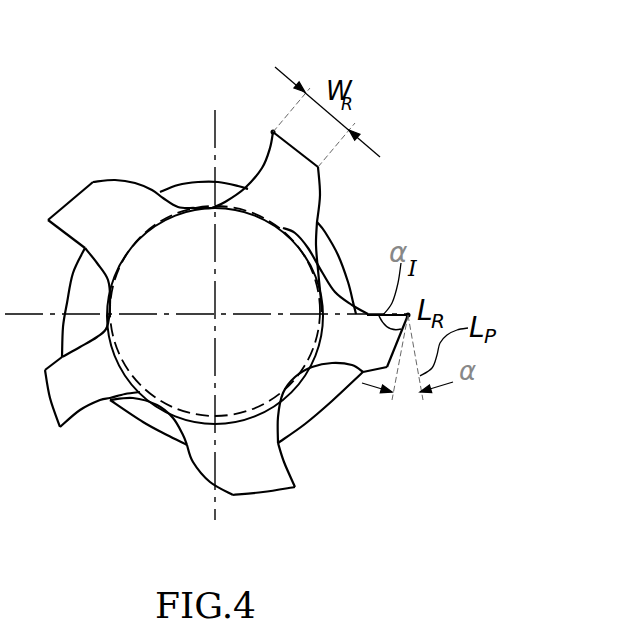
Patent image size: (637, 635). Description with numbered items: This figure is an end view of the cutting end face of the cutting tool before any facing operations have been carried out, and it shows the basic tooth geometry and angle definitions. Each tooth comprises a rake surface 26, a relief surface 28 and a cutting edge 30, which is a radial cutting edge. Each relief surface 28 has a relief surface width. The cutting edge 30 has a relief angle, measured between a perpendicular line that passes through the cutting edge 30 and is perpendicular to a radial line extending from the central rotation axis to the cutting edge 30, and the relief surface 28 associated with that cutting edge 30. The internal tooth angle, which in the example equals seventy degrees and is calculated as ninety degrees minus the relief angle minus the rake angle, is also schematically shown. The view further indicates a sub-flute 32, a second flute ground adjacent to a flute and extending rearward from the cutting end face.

The rake surface 26 is at (258, 140).
The relief surface 28 is at (320, 138).
The cutting edge 30 is at (413, 298).
The sub-flute 32 is at (264, 118).